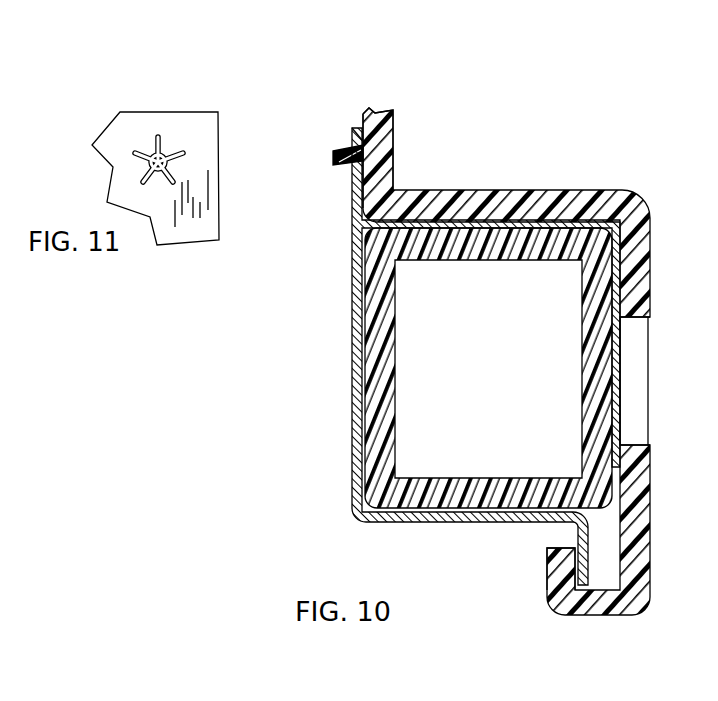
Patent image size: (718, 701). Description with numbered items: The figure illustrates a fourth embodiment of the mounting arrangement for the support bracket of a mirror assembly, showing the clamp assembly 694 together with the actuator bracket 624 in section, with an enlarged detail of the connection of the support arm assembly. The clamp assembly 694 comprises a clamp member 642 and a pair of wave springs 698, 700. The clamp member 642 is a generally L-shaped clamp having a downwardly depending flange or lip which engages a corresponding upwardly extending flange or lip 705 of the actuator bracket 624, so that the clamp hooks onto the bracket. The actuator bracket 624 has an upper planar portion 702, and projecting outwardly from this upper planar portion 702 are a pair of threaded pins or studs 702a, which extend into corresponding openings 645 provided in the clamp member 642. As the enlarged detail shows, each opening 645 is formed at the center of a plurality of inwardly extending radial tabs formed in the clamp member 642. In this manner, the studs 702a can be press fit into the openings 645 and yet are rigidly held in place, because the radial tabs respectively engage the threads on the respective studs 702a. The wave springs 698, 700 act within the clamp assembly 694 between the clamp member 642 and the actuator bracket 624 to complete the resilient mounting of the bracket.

In FIG. 11, the opening 645 is at (176, 128).
In FIG. 10, the actuator bracket 624 is at (499, 186).
In FIG. 10, the wave spring 700 is at (541, 216).
In FIG. 10, the upper planar portion 702 is at (395, 128).
In FIG. 10, the threaded pin or stud 702a is at (338, 150).
In FIG. 10, the clamp member 642 is at (352, 308).
In FIG. 10, the clamp assembly 694 is at (340, 402).
In FIG. 10, the wave spring 698 is at (621, 364).
In FIG. 10, the upwardly extending flange or lip 705 is at (547, 568).